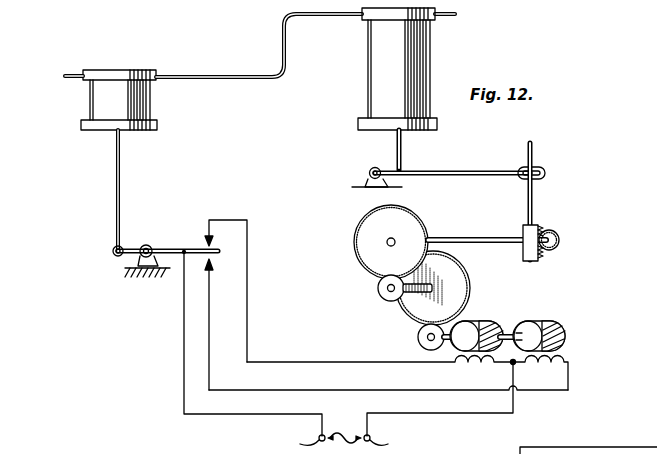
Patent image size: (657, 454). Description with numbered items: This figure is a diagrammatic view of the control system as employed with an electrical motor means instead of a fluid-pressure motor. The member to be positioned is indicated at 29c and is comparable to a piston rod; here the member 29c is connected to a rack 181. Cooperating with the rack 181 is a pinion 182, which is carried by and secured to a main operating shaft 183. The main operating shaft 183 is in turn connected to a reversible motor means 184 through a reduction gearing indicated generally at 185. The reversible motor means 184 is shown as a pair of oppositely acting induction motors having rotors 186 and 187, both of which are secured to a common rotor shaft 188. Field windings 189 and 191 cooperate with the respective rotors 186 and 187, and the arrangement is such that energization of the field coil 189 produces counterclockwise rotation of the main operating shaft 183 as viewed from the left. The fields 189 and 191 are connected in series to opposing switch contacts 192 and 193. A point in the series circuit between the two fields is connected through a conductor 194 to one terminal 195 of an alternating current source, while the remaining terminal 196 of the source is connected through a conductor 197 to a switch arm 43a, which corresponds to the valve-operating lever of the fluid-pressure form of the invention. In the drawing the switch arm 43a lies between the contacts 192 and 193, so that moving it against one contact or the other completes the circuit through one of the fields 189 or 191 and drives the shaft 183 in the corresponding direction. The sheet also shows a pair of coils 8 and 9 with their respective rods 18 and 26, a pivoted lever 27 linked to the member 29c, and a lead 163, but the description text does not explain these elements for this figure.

The solenoid coil 8 is at (86, 99).
The solenoid coil 9 is at (364, 90).
The plunger rod 18 is at (120, 180).
The plunger rod 26 is at (404, 152).
The pivoted lever 27 is at (455, 178).
The member to be positioned 29c is at (535, 156).
The switch arm 43a is at (168, 248).
The lead 163 is at (171, 451).
The rack 181 is at (540, 228).
The pinion 182 is at (560, 241).
The main operating shaft 183 is at (489, 240).
The reversible motor means 184 is at (512, 324).
The reduction gearing 185 is at (365, 279).
The rotor 186 is at (480, 322).
The rotor 187 is at (558, 321).
The common rotor shaft 188 is at (418, 338).
The field winding 189 is at (457, 362).
The field winding 191 is at (568, 366).
The switch contact 192 is at (247, 236).
The switch contact 193 is at (209, 268).
The conductor 194 is at (456, 414).
The terminal 195 is at (389, 441).
The terminal 196 is at (299, 436).
The conductor 197 is at (184, 343).